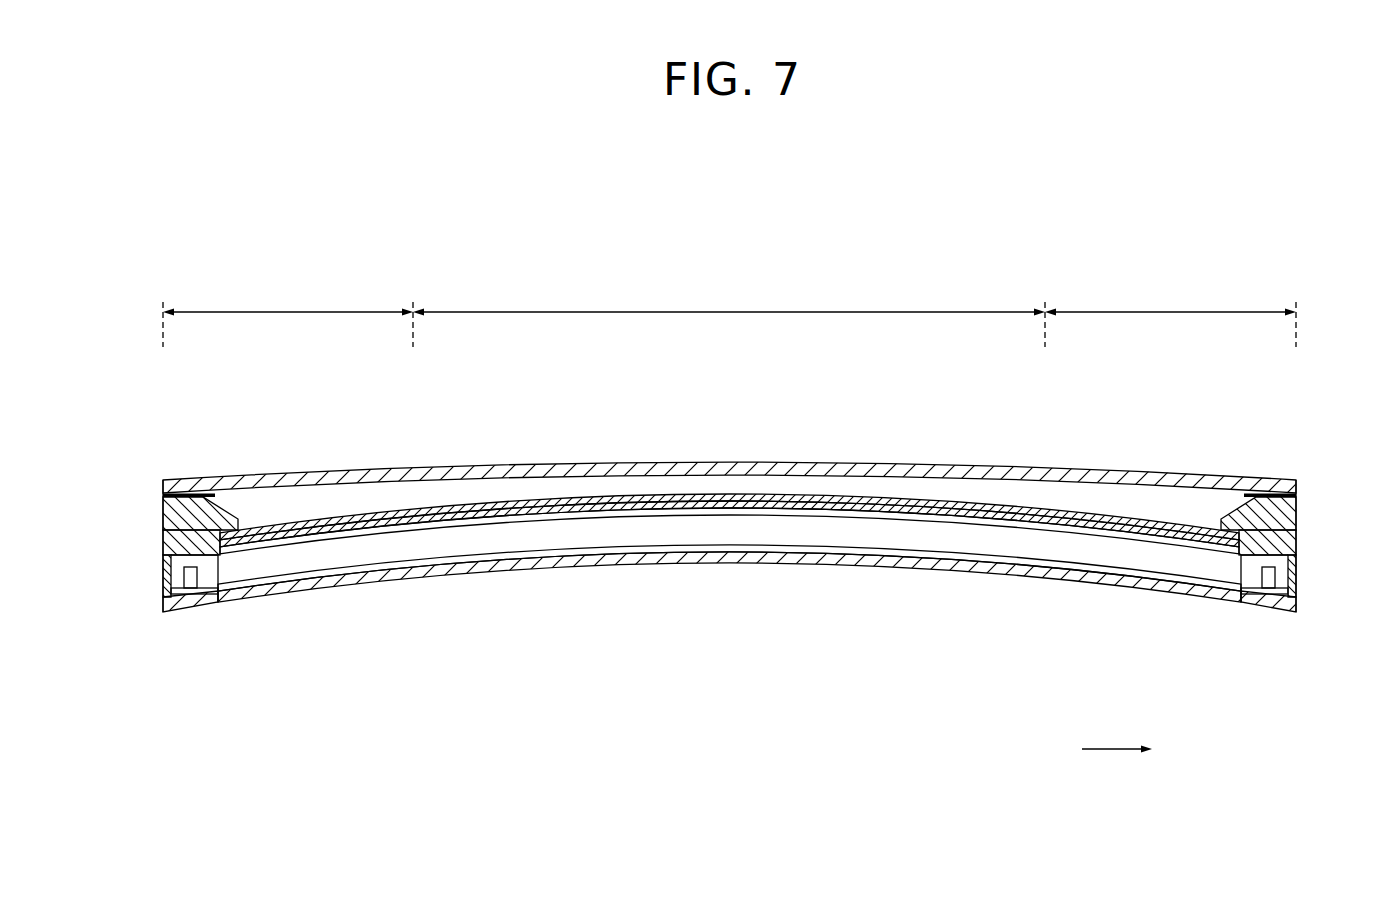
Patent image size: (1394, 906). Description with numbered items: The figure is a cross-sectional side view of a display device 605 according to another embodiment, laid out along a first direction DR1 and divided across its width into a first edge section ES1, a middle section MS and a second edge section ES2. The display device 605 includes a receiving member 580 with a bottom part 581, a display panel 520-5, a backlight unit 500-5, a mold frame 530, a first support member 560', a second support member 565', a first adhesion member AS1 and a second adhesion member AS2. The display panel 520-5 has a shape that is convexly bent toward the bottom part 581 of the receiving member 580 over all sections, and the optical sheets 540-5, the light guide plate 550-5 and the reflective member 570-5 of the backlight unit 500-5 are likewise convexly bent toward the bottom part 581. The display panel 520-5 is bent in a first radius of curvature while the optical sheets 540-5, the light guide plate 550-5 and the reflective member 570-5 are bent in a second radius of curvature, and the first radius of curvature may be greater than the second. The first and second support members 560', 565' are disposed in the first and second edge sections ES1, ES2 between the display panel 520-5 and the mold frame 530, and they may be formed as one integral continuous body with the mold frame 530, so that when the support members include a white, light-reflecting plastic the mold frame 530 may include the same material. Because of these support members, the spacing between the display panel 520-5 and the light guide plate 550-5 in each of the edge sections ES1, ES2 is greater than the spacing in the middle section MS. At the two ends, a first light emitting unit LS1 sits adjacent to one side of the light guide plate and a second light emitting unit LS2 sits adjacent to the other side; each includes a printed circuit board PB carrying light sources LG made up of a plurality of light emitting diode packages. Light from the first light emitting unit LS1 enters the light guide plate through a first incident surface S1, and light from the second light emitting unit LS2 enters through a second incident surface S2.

The display device 605 is at (1262, 223).
The display panel 520-5 is at (1304, 482).
The first adhesion member AS1 is at (167, 496).
The second adhesion member AS2 is at (1297, 497).
The first support member 560' is at (160, 513).
The second support member 565' is at (1299, 518).
The mold frame 530 is at (170, 543).
The receiving member 580 is at (1293, 571).
The optical sheets 540-5 is at (732, 503).
The light guide plate 550-5 is at (800, 534).
The reflective member 570-5 is at (729, 591).
The bottom part 581 is at (702, 637).
The backlight unit 500-5 is at (729, 585).
The light sources LG is at (178, 586).
The printed circuit board PB is at (190, 578).
The first incident surface S1 is at (218, 586).
The second incident surface S2 is at (1232, 616).
The first light emitting unit LS1 is at (189, 636).
The second light emitting unit LS2 is at (1271, 636).
The first edge section ES1 is at (288, 314).
The middle section MS is at (729, 314).
The second edge section ES2 is at (1170, 314).
The first direction DR1 is at (1139, 750).